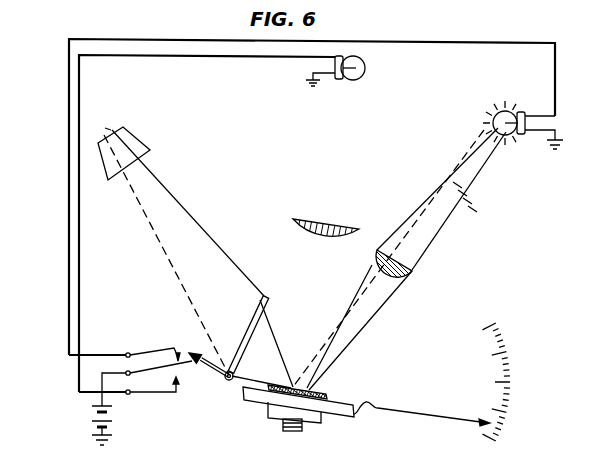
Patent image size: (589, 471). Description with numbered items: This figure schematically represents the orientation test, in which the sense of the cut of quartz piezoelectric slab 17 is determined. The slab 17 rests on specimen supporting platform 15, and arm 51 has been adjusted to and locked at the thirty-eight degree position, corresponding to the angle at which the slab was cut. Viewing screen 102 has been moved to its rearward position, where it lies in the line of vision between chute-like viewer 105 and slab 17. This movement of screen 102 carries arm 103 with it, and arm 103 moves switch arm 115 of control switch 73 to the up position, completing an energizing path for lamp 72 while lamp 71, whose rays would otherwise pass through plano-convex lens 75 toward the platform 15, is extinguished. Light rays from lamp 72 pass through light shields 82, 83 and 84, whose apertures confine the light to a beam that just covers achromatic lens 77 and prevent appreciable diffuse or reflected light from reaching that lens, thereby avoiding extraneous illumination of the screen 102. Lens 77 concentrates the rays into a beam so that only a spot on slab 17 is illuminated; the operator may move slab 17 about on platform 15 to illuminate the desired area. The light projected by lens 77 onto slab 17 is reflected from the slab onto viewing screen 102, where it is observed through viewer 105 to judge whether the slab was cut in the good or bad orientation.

The specimen supporting platform 15 is at (339, 418).
The quartz piezoelectric slab 17 is at (320, 393).
The arm 51 is at (429, 412).
The lamp 71 is at (352, 82).
The lamp 72 is at (518, 149).
The control switch 73 is at (130, 356).
The plano-convex lens 75 is at (332, 222).
The achromatic lens 77 is at (414, 276).
The light shield 82 is at (472, 145).
The light shield 83 is at (447, 177).
The light shield 84 is at (443, 190).
The viewing screen 102 is at (269, 298).
The arm 103 is at (208, 370).
The chute-like viewer 105 is at (138, 134).
The switch arm 115 is at (151, 370).